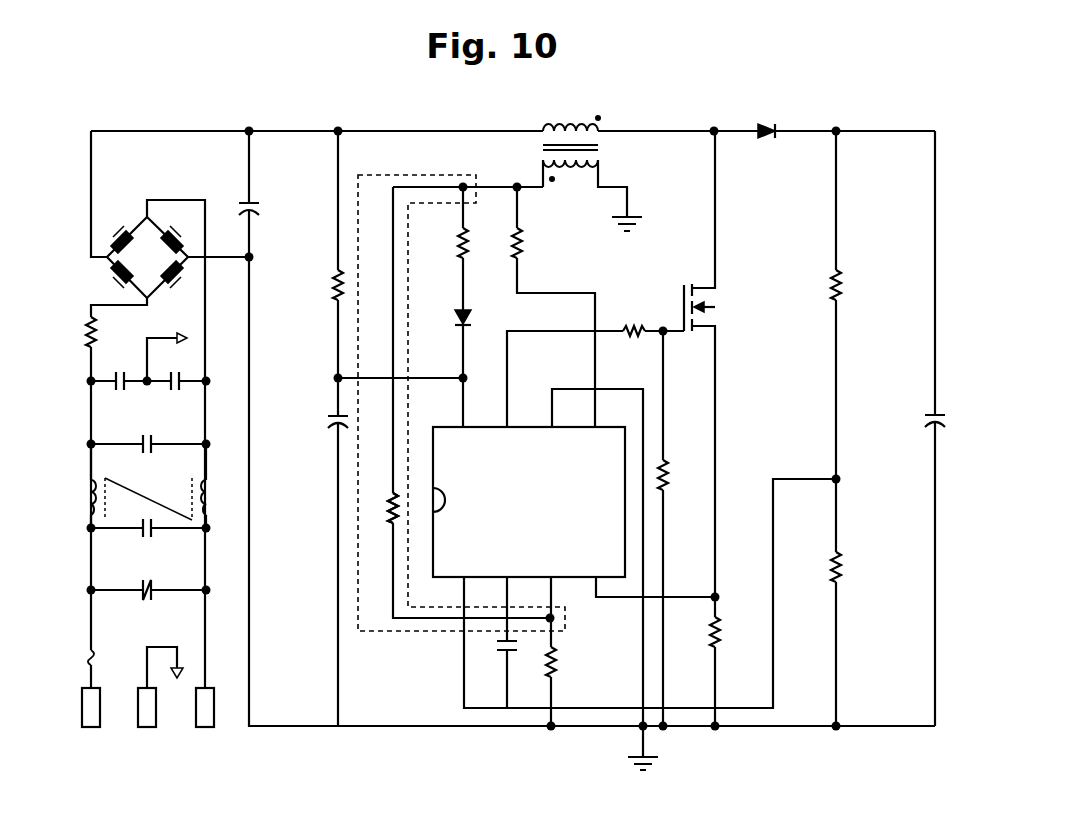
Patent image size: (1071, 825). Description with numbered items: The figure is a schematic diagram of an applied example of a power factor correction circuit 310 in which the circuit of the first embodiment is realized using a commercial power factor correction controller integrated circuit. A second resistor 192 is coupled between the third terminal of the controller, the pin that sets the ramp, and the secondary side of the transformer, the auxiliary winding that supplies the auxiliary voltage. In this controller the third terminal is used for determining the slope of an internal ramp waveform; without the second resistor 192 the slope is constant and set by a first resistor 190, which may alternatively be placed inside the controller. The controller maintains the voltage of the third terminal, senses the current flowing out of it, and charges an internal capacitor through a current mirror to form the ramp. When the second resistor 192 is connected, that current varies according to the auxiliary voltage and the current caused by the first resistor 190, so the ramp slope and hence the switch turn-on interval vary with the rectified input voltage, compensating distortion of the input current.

The power factor correction circuit 310 is at (828, 95).
The resistor R2 192 is at (390, 510).
The resistor R1 190 is at (554, 670).